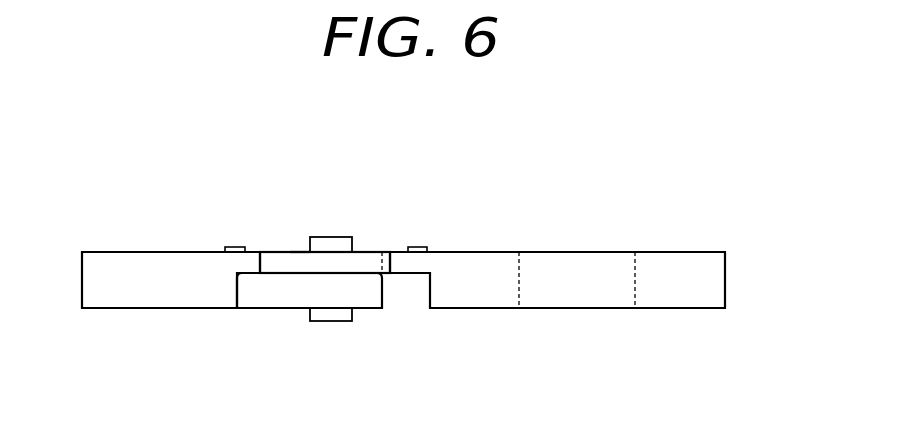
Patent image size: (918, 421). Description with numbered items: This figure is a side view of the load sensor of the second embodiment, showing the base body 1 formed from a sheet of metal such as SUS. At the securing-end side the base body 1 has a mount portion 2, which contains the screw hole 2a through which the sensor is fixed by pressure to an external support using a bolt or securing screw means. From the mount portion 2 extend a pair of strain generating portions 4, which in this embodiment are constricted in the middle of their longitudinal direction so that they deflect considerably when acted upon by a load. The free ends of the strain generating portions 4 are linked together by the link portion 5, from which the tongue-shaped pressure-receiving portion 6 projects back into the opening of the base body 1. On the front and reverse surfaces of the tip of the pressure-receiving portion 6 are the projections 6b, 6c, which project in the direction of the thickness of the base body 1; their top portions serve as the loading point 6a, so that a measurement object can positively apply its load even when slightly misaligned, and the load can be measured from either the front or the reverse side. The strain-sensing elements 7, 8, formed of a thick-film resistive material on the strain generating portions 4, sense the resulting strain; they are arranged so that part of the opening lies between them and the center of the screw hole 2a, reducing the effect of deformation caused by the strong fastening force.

The base body 1 is at (715, 250).
The mount portion 2 is at (557, 277).
The screw hole 2a is at (633, 285).
The strain generating portions 4 is at (343, 262).
The link portion 5 is at (136, 250).
The pressure-receiving portion 6 is at (327, 271).
The loading point 6a is at (345, 236).
The projection 6b is at (307, 250).
The projection 6c is at (310, 311).
The strain-sensing element 7 is at (428, 248).
The strain-sensing element 8 is at (234, 246).